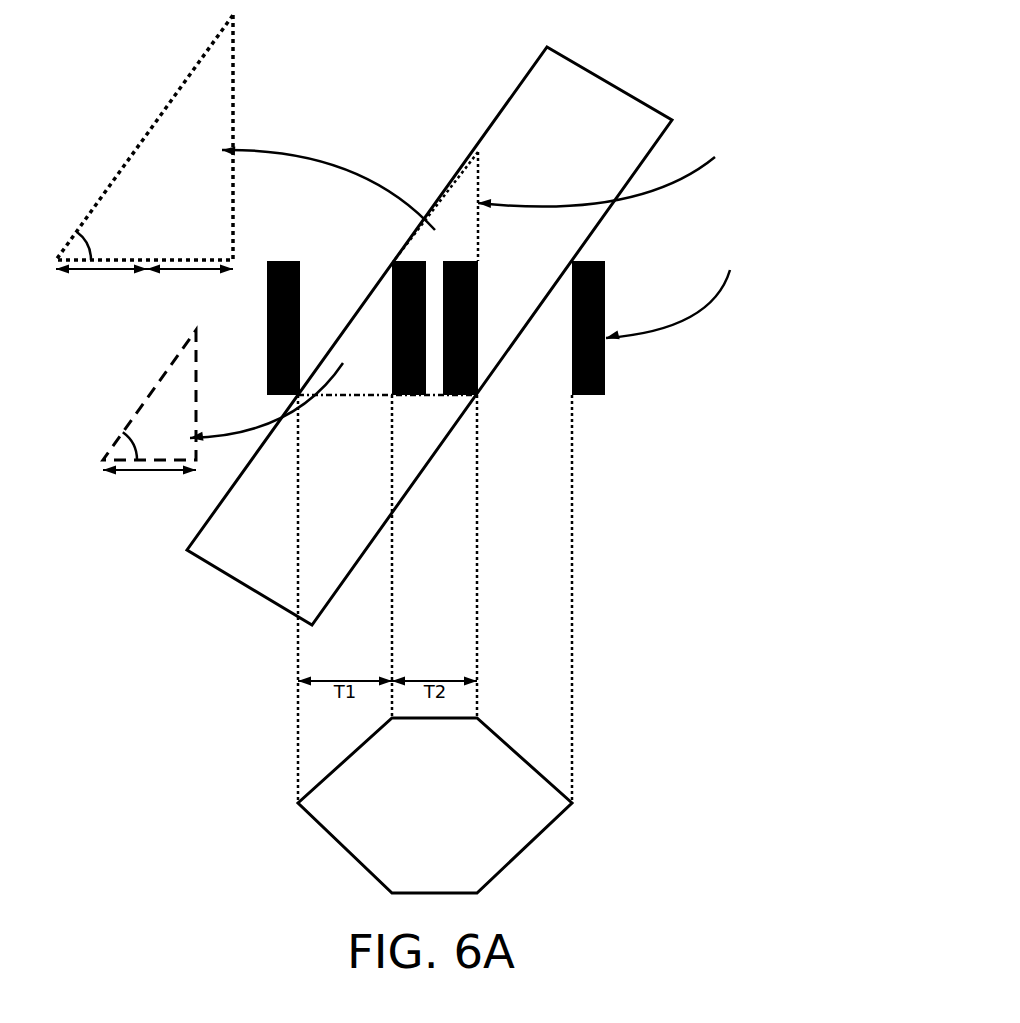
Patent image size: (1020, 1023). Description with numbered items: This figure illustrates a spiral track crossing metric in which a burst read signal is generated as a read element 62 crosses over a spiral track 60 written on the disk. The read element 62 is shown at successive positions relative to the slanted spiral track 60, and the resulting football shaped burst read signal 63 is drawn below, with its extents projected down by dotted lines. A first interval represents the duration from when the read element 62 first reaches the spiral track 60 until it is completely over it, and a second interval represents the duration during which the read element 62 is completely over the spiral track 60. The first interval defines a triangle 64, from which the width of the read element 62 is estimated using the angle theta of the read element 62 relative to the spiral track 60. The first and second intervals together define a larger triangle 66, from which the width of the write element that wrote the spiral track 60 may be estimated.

The spiral track 60 is at (503, 90).
The read element 62 is at (284, 256).
The football shaped burst read signal 63 is at (537, 847).
The triangle 64 is at (140, 392).
The triangle 66 is at (131, 135).